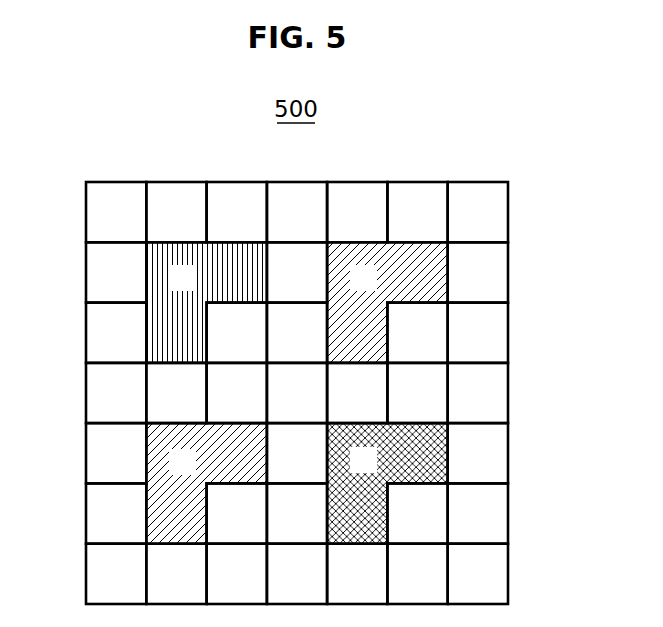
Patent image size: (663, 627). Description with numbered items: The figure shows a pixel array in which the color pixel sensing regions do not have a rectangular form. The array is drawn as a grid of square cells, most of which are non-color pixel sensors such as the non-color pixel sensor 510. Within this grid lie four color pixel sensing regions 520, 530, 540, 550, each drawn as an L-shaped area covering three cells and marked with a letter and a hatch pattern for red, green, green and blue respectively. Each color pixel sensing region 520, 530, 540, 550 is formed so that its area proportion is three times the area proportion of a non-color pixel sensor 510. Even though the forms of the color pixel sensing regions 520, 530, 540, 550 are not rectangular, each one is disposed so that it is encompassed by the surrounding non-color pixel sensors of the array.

The non-color pixel sensor 510 is at (95, 213).
The color pixel sensing region 520 is at (158, 286).
The color pixel sensing region 530 is at (440, 286).
The color pixel sensing region 540 is at (160, 465).
The color pixel sensing region 550 is at (437, 463).